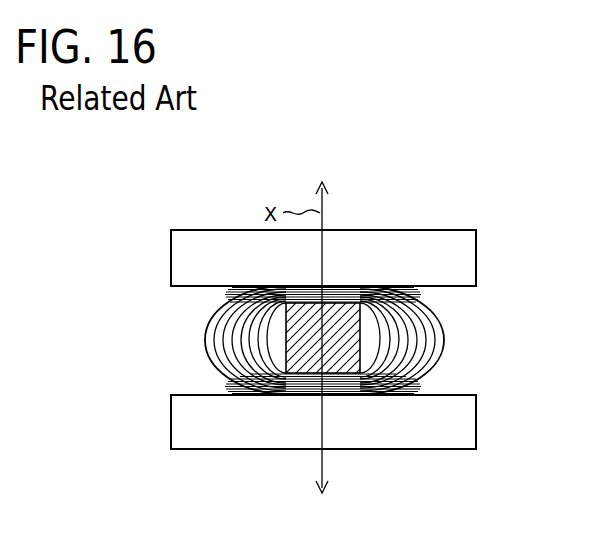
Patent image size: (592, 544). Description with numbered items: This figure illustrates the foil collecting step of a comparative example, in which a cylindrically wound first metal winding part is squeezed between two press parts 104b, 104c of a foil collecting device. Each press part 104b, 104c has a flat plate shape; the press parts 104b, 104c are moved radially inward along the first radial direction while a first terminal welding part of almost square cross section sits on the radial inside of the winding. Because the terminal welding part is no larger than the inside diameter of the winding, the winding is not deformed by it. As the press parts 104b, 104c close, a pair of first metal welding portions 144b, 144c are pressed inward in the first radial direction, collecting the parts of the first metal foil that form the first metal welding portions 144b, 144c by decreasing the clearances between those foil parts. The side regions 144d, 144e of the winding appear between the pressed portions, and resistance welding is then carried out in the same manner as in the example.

The press part 104c is at (182, 258).
The press part 104b is at (182, 421).
The first metal welding portion 144c is at (348, 290).
The first metal welding portion 144b is at (340, 396).
The left coil portion 144d is at (206, 346).
The right coil portion 144e is at (443, 343).